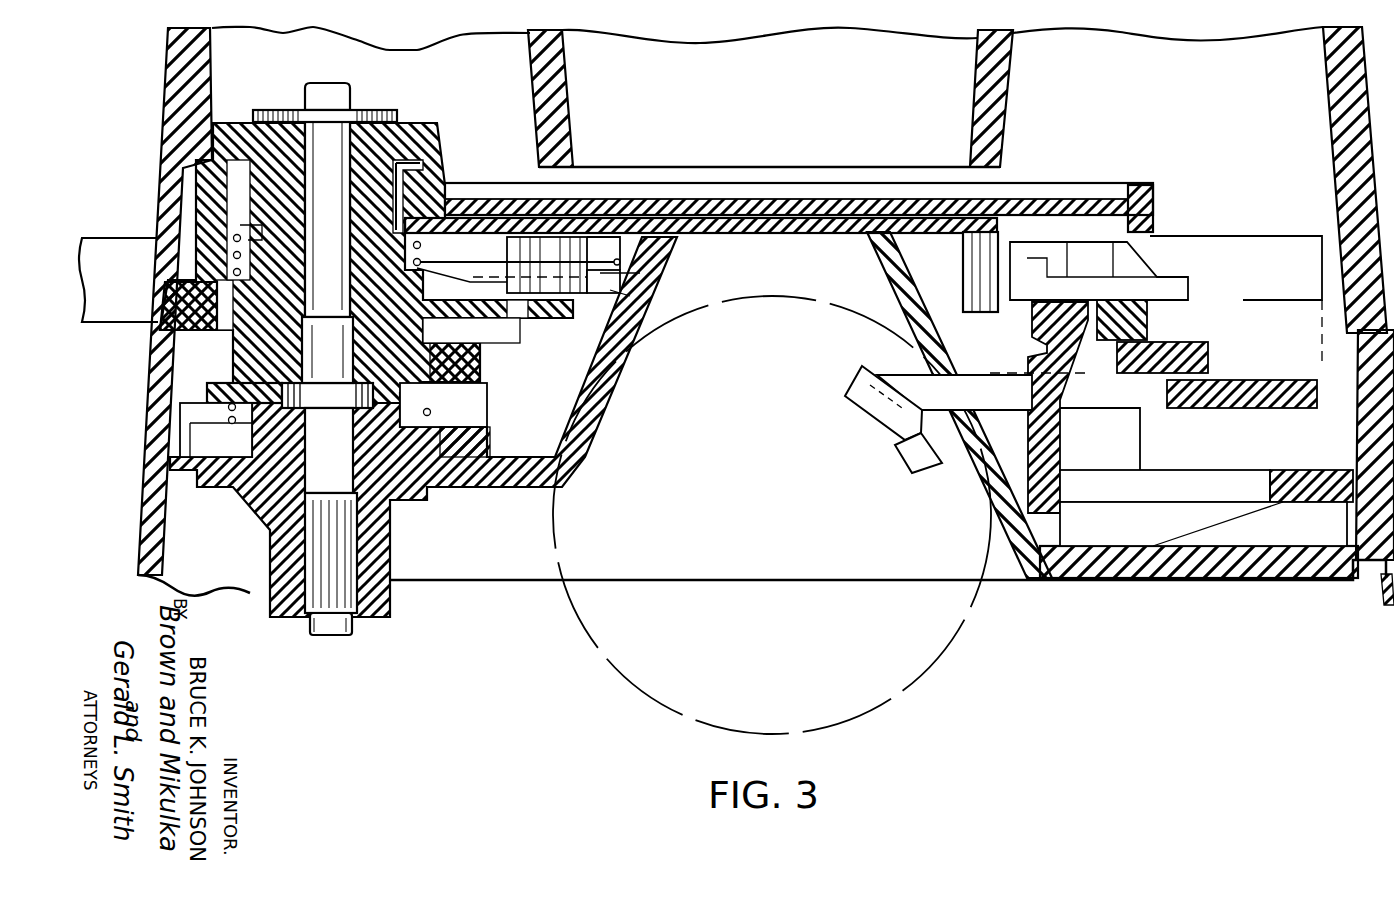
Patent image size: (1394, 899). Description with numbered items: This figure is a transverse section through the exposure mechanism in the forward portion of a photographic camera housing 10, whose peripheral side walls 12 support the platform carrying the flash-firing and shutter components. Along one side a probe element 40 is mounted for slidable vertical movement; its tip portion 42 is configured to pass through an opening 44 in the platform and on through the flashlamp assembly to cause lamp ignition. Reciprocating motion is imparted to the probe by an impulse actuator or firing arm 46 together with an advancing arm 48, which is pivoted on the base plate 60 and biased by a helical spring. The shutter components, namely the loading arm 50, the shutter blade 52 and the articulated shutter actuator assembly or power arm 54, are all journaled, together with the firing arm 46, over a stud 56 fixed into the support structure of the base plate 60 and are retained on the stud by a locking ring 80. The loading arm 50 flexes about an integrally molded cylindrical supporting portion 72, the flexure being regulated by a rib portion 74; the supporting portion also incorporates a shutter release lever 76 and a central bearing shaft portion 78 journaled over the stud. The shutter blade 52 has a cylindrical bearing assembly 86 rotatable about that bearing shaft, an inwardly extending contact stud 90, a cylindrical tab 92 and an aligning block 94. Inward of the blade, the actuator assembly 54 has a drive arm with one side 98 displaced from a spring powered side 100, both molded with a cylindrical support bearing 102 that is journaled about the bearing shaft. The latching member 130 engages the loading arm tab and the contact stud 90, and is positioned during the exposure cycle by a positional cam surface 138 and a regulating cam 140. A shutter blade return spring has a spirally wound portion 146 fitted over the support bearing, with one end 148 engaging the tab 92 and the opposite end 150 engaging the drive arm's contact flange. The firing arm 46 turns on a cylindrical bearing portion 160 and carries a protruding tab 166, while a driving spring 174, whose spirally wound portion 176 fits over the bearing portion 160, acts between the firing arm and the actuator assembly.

The housing 10 is at (1118, 588).
The peripheral side walls 12 is at (1383, 596).
The probe element 40 is at (1000, 388).
The tip portion 42 is at (876, 422).
The opening 44 is at (908, 468).
The impulse actuator (firing arm) 46 is at (490, 430).
The advancing arm 48 is at (1190, 482).
The loading arm 50 is at (1045, 198).
The shutter blade 52 is at (780, 240).
The articulated shutter actuator assembly (power arm) 54 is at (430, 330).
The stud 56 is at (308, 95).
The base plate 60 is at (497, 487).
The supporting portion 72 is at (405, 138).
The rib portion 74 is at (1153, 190).
The shutter release lever 76 is at (118, 299).
The central bearing shaft portion 78 is at (232, 340).
The locking ring 80 is at (360, 110).
The cylindrical bearing assembly 86 is at (415, 176).
The contact stud 90 is at (965, 263).
The cylindrical tab 92 is at (503, 243).
The aligning block 94 is at (613, 262).
The side of drive arm 98 is at (478, 365).
The spring powered side 100 is at (550, 318).
The cylindrical support bearing 102 is at (227, 230).
The latching member 130 is at (1135, 275).
The positional cam surface 138 is at (1042, 322).
The regulating cam 140 is at (1077, 410).
The spirally wound portion 146 is at (418, 238).
The spring end 148 is at (645, 274).
The spring end 150 is at (645, 302).
The cylindrical bearing portion 160 is at (410, 406).
The tab 166 is at (1165, 345).
The driving spring 174 is at (462, 412).
The spirally wound portion 176 is at (228, 408).